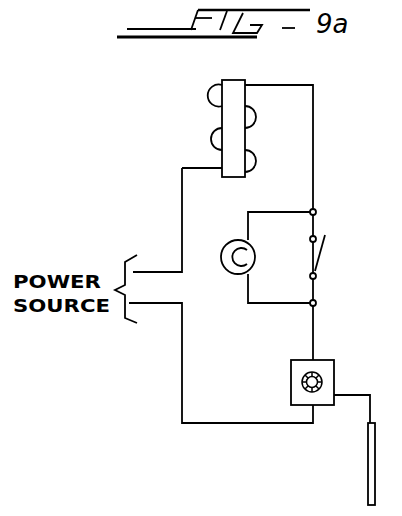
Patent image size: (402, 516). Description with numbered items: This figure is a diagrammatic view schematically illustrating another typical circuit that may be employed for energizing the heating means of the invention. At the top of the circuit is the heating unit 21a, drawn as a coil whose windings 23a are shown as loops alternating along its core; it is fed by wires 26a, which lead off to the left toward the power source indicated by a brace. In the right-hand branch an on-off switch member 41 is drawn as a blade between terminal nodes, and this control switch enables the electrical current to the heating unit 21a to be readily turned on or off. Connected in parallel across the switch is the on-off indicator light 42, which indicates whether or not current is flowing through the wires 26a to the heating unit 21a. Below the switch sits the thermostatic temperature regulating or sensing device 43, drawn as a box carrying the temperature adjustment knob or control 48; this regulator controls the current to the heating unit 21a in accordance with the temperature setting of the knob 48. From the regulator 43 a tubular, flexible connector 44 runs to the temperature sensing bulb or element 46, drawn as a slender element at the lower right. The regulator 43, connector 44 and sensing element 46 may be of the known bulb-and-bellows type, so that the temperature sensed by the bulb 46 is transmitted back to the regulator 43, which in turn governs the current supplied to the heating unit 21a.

The heating unit 21a is at (241, 80).
The coil windings 23a is at (211, 139).
The wires 26a is at (182, 248).
The on-off switch member 41 is at (322, 253).
The on-off indicator light 42 is at (228, 272).
The thermostatic temperature regulating or sensing device 43 is at (318, 360).
The temperature adjustment knob 48 is at (322, 378).
The tubular, flexible connector 44 is at (348, 397).
The temperature sensing bulb or element 46 is at (367, 485).